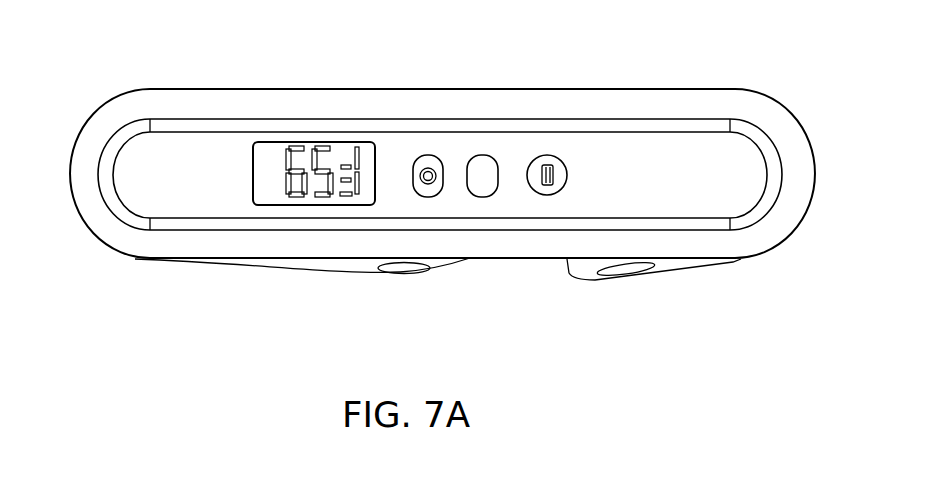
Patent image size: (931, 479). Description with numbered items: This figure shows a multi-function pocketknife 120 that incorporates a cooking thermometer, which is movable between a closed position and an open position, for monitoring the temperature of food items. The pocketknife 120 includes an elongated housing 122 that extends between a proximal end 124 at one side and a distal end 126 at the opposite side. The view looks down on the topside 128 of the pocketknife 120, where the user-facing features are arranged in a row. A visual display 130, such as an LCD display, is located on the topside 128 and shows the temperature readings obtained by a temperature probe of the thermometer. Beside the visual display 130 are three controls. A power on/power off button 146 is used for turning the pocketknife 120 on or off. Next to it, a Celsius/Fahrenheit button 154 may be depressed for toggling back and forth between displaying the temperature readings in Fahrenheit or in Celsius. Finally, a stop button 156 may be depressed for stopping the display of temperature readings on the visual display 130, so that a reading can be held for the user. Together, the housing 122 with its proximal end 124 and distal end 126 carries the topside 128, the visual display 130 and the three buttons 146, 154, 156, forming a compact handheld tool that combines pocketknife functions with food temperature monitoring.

The multi-function pocketknife 120 is at (186, 62).
The housing 122 is at (313, 107).
The proximal end 124 is at (773, 272).
The distal end 126 is at (101, 265).
The topside 128 is at (190, 186).
The visual display 130 is at (298, 206).
The power on/power off button 146 is at (428, 155).
The Celsius/Fahrenheit button 154 is at (483, 155).
The stop button 156 is at (549, 155).